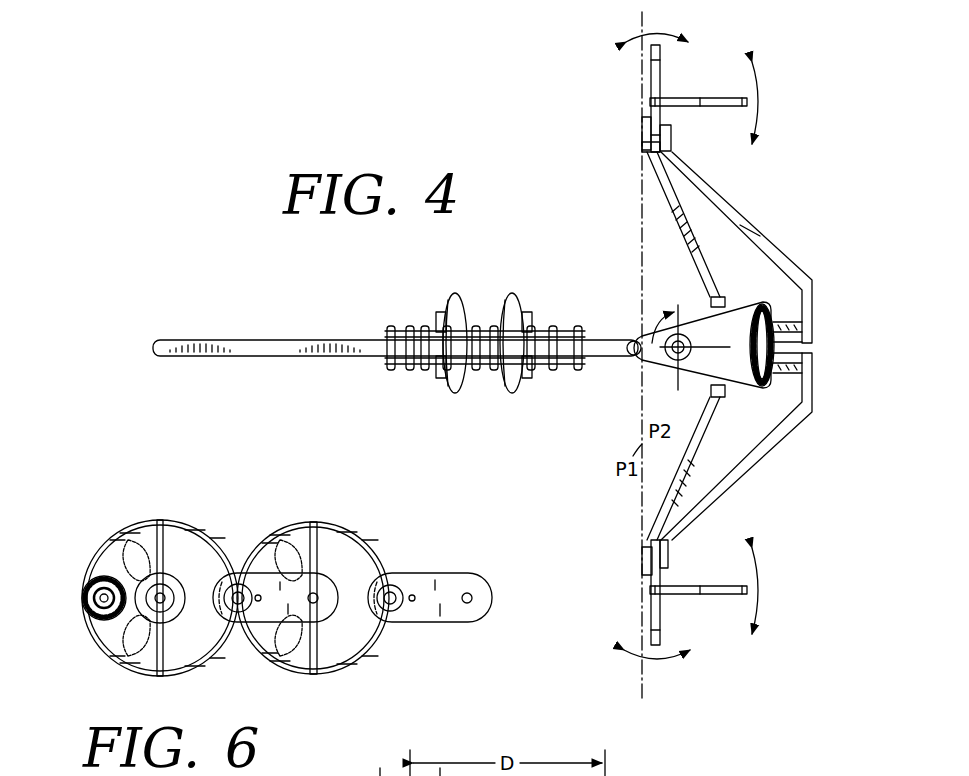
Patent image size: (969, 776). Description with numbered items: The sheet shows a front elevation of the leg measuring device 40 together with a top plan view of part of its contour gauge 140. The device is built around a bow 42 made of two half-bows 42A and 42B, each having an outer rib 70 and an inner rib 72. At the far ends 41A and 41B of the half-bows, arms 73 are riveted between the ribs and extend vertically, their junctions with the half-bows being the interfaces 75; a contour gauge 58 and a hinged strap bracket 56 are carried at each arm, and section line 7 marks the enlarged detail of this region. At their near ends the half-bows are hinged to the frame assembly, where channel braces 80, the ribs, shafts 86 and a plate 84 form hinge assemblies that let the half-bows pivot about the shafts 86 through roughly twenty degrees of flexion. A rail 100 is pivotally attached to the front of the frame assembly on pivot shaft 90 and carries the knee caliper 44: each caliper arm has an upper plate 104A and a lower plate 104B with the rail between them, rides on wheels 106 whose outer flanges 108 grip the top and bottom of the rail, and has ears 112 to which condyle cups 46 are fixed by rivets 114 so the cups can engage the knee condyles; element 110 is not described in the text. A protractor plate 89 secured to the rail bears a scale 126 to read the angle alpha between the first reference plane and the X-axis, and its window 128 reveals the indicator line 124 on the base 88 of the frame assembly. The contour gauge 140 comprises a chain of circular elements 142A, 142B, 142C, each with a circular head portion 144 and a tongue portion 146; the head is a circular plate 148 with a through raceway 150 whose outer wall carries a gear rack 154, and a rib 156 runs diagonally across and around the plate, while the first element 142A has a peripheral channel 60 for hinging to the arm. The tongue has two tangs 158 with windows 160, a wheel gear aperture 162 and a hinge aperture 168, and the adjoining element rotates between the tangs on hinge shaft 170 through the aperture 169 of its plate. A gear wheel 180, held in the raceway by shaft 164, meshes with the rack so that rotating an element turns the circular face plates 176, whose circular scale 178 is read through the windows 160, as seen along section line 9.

In FIG. 4, the section line 7 is at (612, 100).
In FIG. 4, the leg measuring device 40 is at (607, 246).
In FIG. 4, the strap bracket 56 is at (650, 75).
In FIG. 4, the contour gauge 58 is at (693, 98).
In FIG. 4, the far end of half-bow 41A is at (666, 555).
In FIG. 4, the far end of half-bow 41B is at (645, 120).
In FIG. 4, the arm 73 is at (665, 126).
In FIG. 4, the interface 75 is at (642, 145).
In FIG. 4, the bow 42 is at (749, 346).
In FIG. 4, the half-bow 42A is at (788, 436).
In FIG. 4, the half-bow 42B is at (786, 250).
In FIG. 4, the outer rib 70 is at (750, 222).
In FIG. 4, the inner rib 72 is at (700, 252).
In FIG. 4, the channel brace 80 is at (722, 390).
In FIG. 4, the plate 84 is at (680, 365).
In FIG. 4, the protractor plate 89 is at (700, 321).
In FIG. 4, the indicator line 124 is at (757, 346).
In FIG. 4, the window 128 is at (760, 318).
In FIG. 4, the protractor scale 126 is at (775, 386).
In FIG. 4, the shaft 86 is at (780, 320).
In FIG. 4, the base 88 is at (806, 350).
In FIG. 4, the angle alpha is at (660, 322).
In FIG. 4, the rail 100 is at (256, 344).
In FIG. 4, the knee caliper 44 is at (496, 301).
In FIG. 4, the condyle cup 46 is at (458, 388).
In FIG. 4, the upper plate 104A is at (405, 335).
In FIG. 4, the lower plate 104B is at (400, 367).
In FIG. 4, the chain link 110 is at (390, 363).
In FIG. 4, the ear 112 is at (530, 318).
In FIG. 4, the rivet 114 is at (534, 320).
In FIG. 4, the wheel 106 is at (588, 350).
In FIG. 4, the outer flange 108 is at (556, 366).
In FIG. 4, the pivot shaft 90 is at (650, 362).
In FIG. 6, the section line 9 is at (545, 598).
In FIG. 6, the contour gauge 140 is at (220, 479).
In FIG. 6, the circular element 142B is at (166, 520).
In FIG. 6, the circular element 142C is at (342, 524).
In FIG. 6, the circular head portion 144 is at (313, 522).
In FIG. 6, the tongue portion 146 is at (440, 574).
In FIG. 6, the circular plate 148 is at (314, 680).
In FIG. 6, the raceway 150 is at (292, 656).
In FIG. 6, the gear rack 154 is at (295, 646).
In FIG. 6, the rib 156 is at (183, 676).
In FIG. 6, the tang 158 is at (492, 605).
In FIG. 6, the window 160 is at (238, 584).
In FIG. 6, the wheel gear aperture 162 is at (412, 594).
In FIG. 6, the shaft 164 is at (100, 576).
In FIG. 6, the hinge aperture 168 is at (467, 604).
In FIG. 6, the aperture 169 is at (167, 593).
In FIG. 6, the hinge shaft 170 is at (316, 594).
In FIG. 6, the circular face plate 176 is at (88, 582).
In FIG. 6, the circular scale 178 is at (118, 641).
In FIG. 6, the gear wheel 180 is at (100, 607).
In FIG. 6, the channel 60 is at (640, 775).
In FIG. 6, the first circular element 142A is at (660, 775).